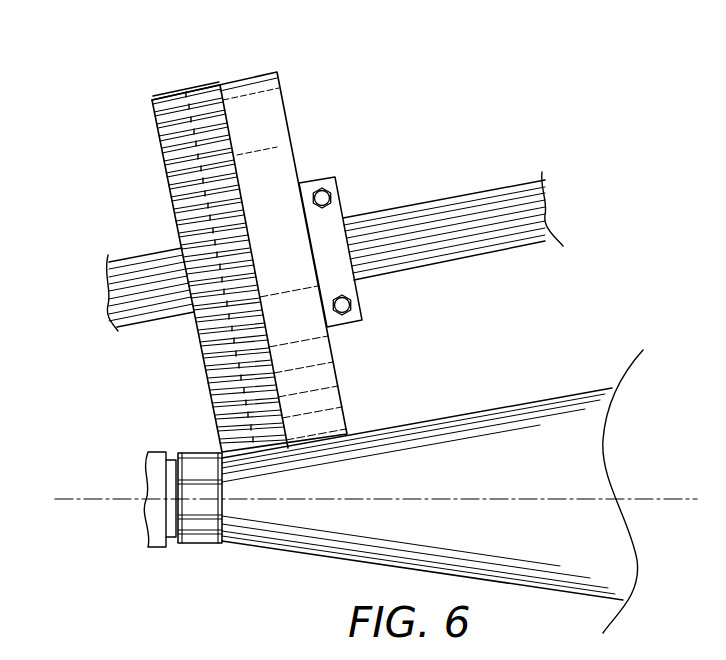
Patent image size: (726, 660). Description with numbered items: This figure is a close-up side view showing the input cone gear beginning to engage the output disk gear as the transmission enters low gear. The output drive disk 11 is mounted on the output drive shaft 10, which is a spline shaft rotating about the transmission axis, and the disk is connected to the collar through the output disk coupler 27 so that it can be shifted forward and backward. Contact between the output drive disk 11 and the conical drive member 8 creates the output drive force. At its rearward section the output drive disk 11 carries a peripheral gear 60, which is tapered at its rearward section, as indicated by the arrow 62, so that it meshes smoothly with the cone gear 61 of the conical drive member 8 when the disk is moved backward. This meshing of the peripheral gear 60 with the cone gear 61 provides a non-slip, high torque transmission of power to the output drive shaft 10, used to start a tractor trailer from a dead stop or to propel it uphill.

The conical drive member 8 is at (437, 445).
The output drive shaft 10 is at (427, 206).
The output drive disk 11 is at (247, 66).
The output disk coupler 27 is at (308, 182).
The peripheral gear 60 is at (197, 90).
The cone gear 61 is at (202, 546).
The arrow 62 is at (153, 98).